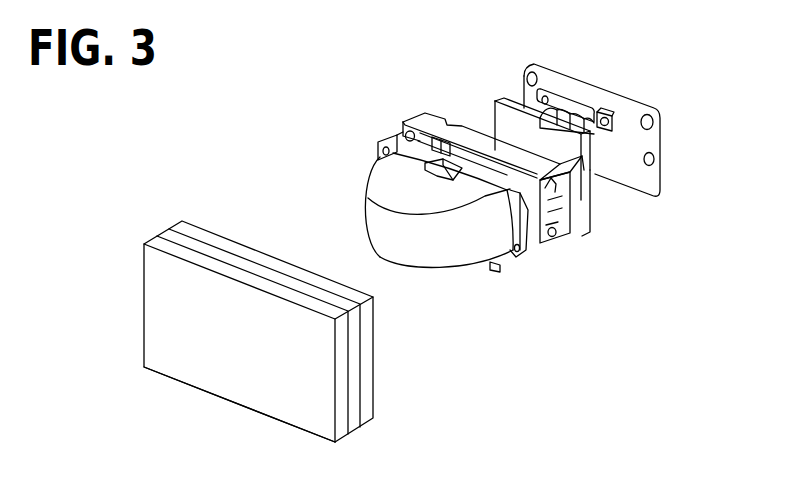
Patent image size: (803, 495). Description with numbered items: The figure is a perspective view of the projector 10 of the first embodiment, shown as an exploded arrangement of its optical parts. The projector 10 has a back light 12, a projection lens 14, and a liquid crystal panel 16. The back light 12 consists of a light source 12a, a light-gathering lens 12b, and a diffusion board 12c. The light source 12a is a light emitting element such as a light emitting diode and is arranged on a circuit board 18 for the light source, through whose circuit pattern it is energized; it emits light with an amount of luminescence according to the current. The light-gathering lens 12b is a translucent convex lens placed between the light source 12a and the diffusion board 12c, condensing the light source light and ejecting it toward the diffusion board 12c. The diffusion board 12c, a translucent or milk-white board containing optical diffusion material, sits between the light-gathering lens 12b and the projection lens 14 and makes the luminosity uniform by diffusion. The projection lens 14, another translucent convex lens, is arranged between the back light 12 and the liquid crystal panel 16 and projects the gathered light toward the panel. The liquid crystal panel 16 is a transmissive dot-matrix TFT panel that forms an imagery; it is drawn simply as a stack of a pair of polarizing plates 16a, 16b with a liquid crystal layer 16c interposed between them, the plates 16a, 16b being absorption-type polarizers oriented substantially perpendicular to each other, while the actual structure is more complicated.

The projector 10 is at (337, 134).
The back light 12 is at (603, 209).
The light source 12a is at (612, 125).
The light-gathering lens 12b is at (590, 165).
The diffusion board 12c is at (586, 188).
The projection lens 14 is at (440, 260).
The liquid crystal panel 16 is at (320, 350).
The polarizing plate 16a is at (367, 407).
The polarizing plate 16b is at (345, 443).
The liquid crystal layer 16c is at (358, 428).
The circuit board 18 is at (650, 142).